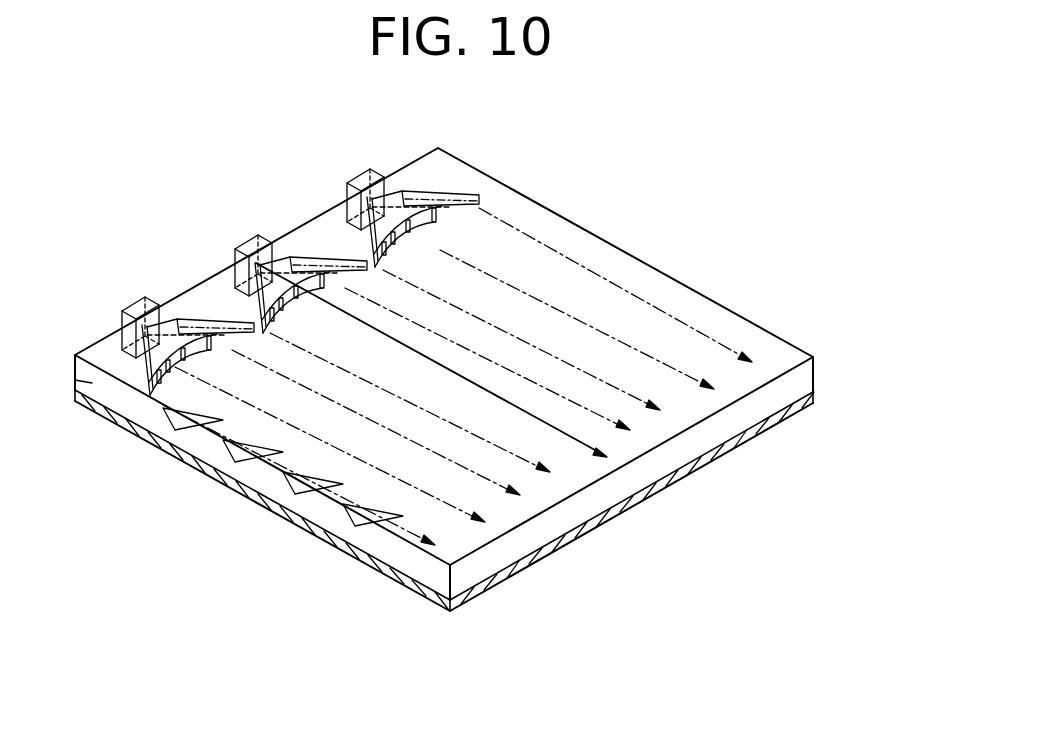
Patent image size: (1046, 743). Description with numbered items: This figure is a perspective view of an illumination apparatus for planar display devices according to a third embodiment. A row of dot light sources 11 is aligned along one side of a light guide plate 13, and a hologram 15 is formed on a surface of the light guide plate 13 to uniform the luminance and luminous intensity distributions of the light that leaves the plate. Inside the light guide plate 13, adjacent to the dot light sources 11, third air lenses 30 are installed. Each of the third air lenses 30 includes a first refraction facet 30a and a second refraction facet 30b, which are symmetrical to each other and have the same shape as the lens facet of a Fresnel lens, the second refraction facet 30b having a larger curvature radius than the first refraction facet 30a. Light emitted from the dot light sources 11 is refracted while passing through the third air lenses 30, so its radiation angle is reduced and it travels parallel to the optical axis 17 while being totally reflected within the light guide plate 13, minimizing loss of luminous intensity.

The dot light sources 11 is at (350, 180).
The light guide plate 13 is at (813, 372).
The hologram 15 is at (813, 397).
The optical axis 17 is at (577, 441).
The third air lenses 30 is at (466, 180).
The first refraction facet 30a is at (392, 205).
The second refraction facet 30b is at (479, 204).